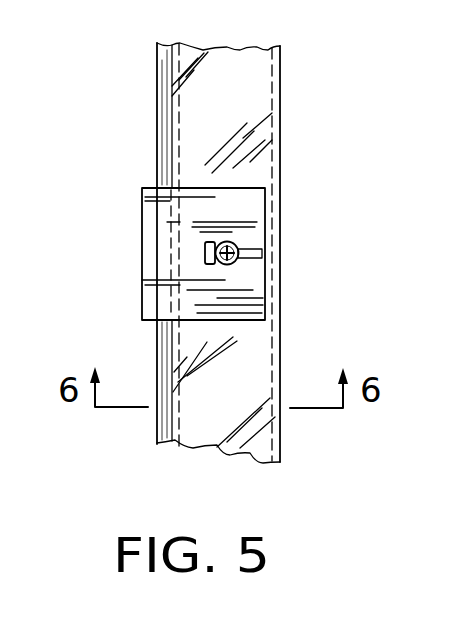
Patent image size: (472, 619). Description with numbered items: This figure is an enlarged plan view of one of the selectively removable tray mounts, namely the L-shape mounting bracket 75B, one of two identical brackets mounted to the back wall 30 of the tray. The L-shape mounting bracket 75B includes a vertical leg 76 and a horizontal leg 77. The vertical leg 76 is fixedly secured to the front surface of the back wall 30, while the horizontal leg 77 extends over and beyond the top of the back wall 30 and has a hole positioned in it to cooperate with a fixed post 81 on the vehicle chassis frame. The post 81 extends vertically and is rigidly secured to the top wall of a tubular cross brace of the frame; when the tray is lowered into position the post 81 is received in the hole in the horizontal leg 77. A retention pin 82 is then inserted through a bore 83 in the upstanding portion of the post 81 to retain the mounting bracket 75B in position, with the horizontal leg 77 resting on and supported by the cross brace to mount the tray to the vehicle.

The back wall 30 is at (158, 113).
The L-shape mounting bracket 75B is at (136, 228).
The vertical leg 76 is at (150, 298).
The horizontal leg 77 is at (240, 196).
The post 81 is at (231, 241).
The retention pin 82 is at (250, 272).
The bore 83 is at (238, 268).